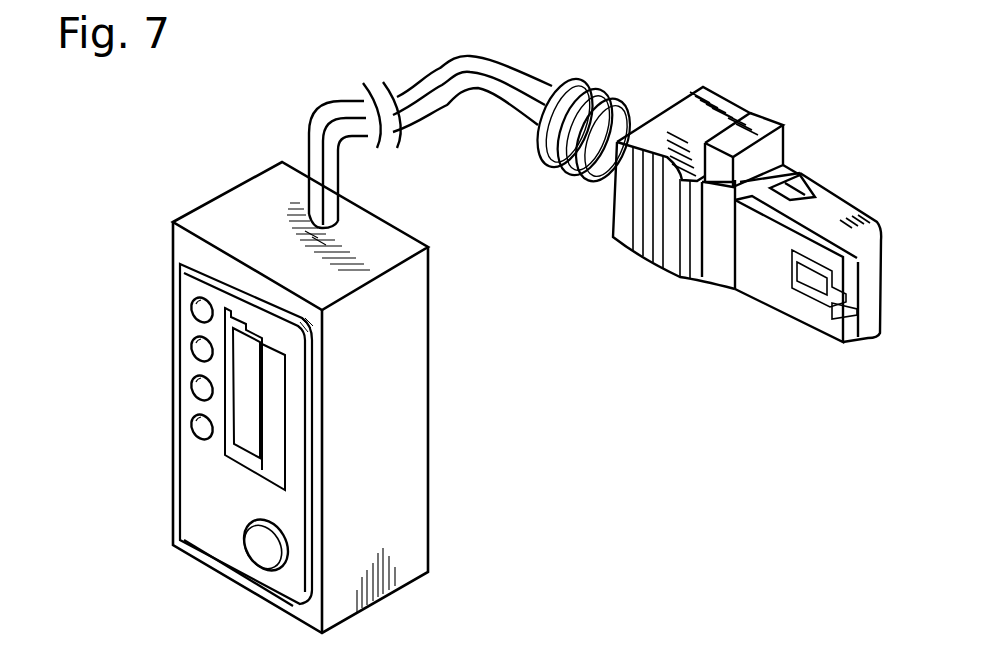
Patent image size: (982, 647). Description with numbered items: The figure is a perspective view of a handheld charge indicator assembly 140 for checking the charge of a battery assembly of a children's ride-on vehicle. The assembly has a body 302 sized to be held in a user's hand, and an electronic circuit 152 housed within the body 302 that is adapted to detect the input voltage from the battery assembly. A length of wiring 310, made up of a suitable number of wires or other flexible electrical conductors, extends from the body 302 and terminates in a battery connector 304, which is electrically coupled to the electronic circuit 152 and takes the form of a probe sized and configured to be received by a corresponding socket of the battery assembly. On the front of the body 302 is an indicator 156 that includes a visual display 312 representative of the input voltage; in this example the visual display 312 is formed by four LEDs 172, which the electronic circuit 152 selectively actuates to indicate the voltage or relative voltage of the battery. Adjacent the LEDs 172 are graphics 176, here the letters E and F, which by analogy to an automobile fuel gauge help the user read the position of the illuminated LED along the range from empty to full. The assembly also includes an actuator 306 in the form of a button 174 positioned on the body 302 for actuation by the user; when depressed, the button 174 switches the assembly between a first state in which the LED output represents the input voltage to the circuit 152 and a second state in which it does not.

The handheld charge indicator assembly 140 is at (174, 111).
The electronic circuit 152 is at (410, 439).
The indicator 156 is at (232, 271).
The LEDs 172 is at (192, 425).
The button 174 is at (260, 550).
The graphics 176 is at (272, 397).
The body 302 is at (428, 385).
The battery connector 304 is at (833, 205).
The actuator 306 is at (238, 530).
The wiring 310 is at (302, 140).
The visual display 312 is at (209, 281).